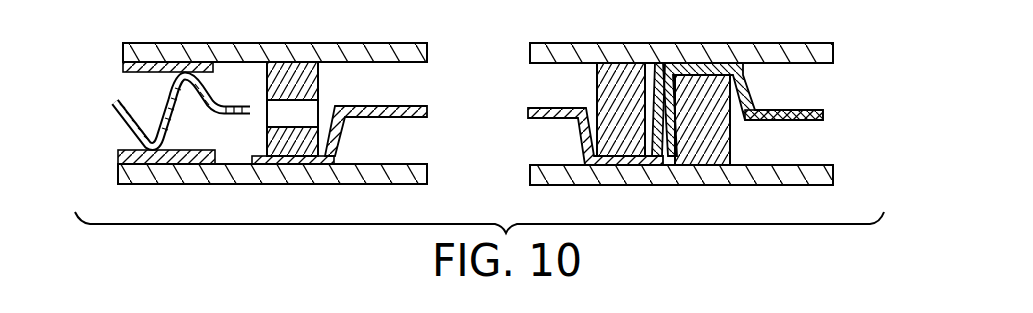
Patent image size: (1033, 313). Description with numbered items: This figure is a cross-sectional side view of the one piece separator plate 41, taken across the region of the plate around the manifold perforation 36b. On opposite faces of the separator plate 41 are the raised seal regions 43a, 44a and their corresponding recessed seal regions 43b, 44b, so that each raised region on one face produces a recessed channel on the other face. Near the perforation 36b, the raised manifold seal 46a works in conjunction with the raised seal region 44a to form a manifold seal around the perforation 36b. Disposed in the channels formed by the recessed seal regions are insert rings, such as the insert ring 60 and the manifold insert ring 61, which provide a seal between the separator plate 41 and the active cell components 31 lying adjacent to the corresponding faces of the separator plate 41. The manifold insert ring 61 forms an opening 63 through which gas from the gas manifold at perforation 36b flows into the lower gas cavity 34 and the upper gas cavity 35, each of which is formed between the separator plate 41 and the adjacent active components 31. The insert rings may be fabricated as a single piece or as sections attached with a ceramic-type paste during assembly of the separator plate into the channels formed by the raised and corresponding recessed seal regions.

The active cell components 31 is at (352, 43).
The lower gas cavity 34 is at (207, 137).
The upper gas cavity 35 is at (254, 93).
The perforation 36b is at (477, 67).
The separator plate 41 is at (808, 108).
The raised seal region 43a is at (708, 90).
The recessed seal region 43b is at (717, 87).
The raised seal region 44a is at (630, 158).
The recessed seal region 44b is at (634, 168).
The raised manifold seal 46a is at (286, 165).
The insert ring 60 is at (722, 168).
The manifold insert ring 61 is at (285, 62).
The opening 63 is at (290, 148).